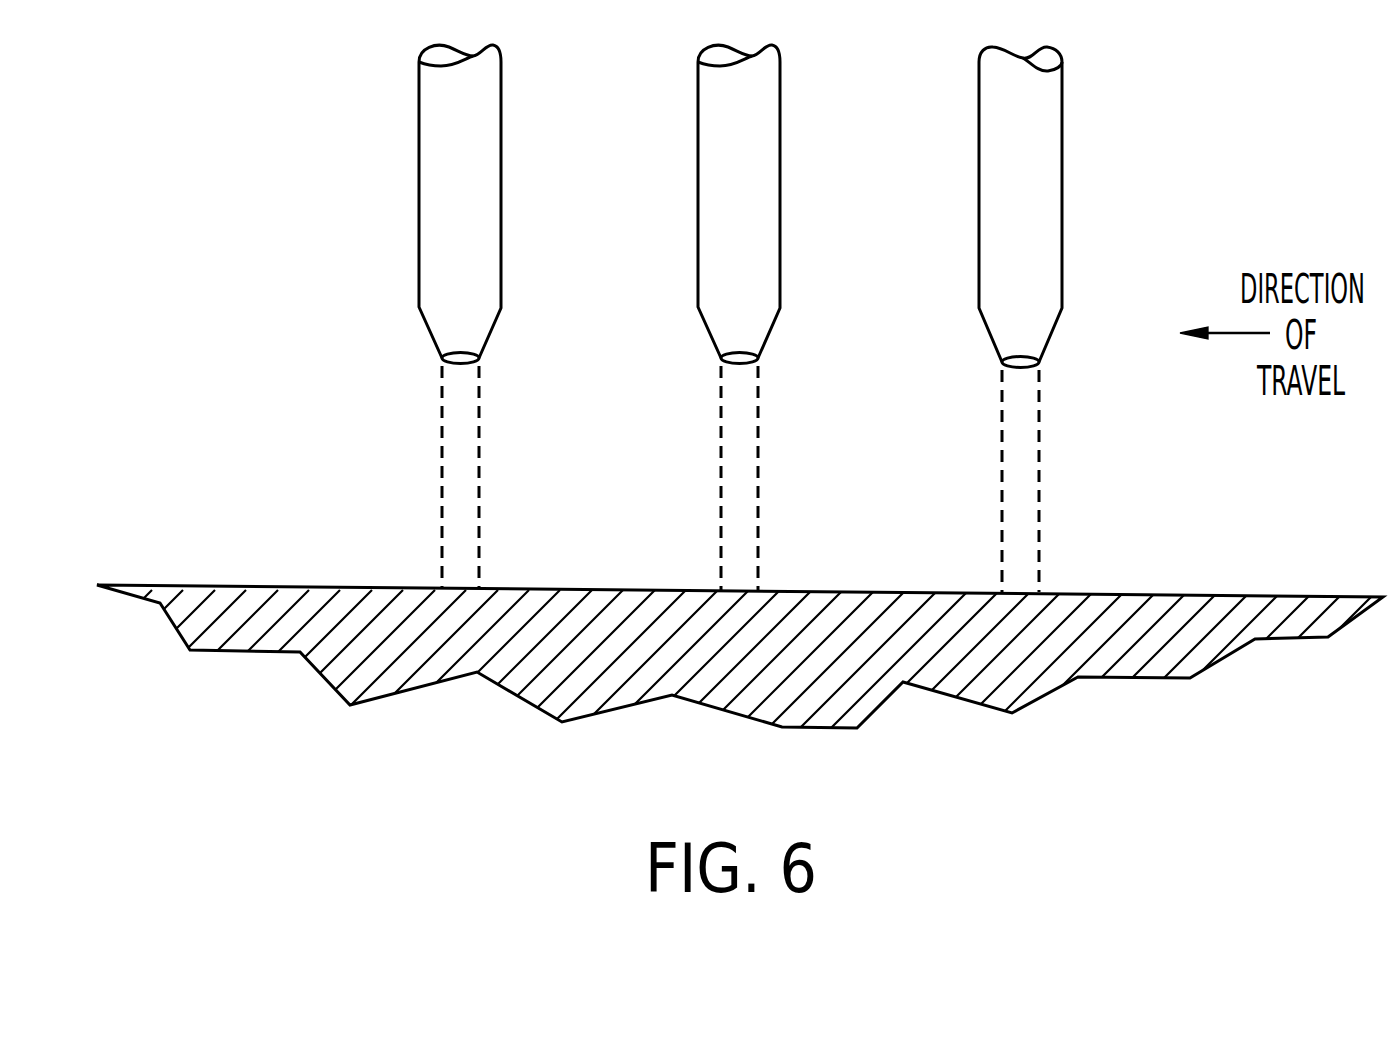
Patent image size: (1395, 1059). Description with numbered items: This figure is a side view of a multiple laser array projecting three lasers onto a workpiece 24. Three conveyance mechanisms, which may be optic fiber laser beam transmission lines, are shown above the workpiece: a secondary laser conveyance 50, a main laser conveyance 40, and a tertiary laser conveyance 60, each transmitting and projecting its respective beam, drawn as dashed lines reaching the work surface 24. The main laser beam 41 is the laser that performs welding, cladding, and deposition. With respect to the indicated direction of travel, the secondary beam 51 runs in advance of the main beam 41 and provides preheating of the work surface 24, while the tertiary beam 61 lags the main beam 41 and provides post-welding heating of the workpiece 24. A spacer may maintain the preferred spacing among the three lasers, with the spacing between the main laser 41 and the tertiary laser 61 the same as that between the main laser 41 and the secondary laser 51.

The workpiece 24 is at (982, 693).
The main laser conveyance 40 is at (780, 157).
The main laser beam 41 is at (758, 468).
The secondary laser conveyance 50 is at (419, 151).
The secondary laser beam 51 is at (441, 463).
The tertiary laser conveyance 60 is at (1062, 158).
The tertiary laser beam 61 is at (1038, 470).